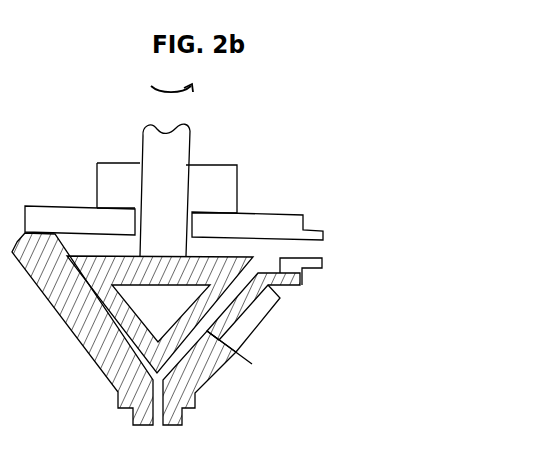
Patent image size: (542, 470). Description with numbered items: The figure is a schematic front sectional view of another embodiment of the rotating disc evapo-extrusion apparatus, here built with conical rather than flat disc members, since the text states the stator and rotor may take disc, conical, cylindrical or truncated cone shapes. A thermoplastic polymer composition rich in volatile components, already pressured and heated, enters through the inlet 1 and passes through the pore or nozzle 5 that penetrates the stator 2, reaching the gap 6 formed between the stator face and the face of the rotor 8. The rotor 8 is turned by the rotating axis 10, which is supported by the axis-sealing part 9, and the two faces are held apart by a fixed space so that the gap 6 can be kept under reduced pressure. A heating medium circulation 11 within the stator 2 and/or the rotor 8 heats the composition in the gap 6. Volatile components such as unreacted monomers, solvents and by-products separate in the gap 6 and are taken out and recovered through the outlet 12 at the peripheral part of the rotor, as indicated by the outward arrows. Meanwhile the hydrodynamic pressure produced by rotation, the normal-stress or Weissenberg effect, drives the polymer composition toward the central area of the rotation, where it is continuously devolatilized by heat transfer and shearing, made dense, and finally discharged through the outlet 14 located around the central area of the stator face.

The inlet 1 is at (256, 371).
The stator 2 is at (63, 272).
The pore (nozzle) 5 is at (212, 336).
The gap 6 is at (196, 340).
The rotor 8 is at (240, 256).
The axis-sealing part 9 is at (218, 198).
The rotating axis 10 is at (173, 158).
The heating medium circulation 11 is at (277, 328).
The outlet 12 is at (0, 122).
The outlet 14 is at (157, 430).